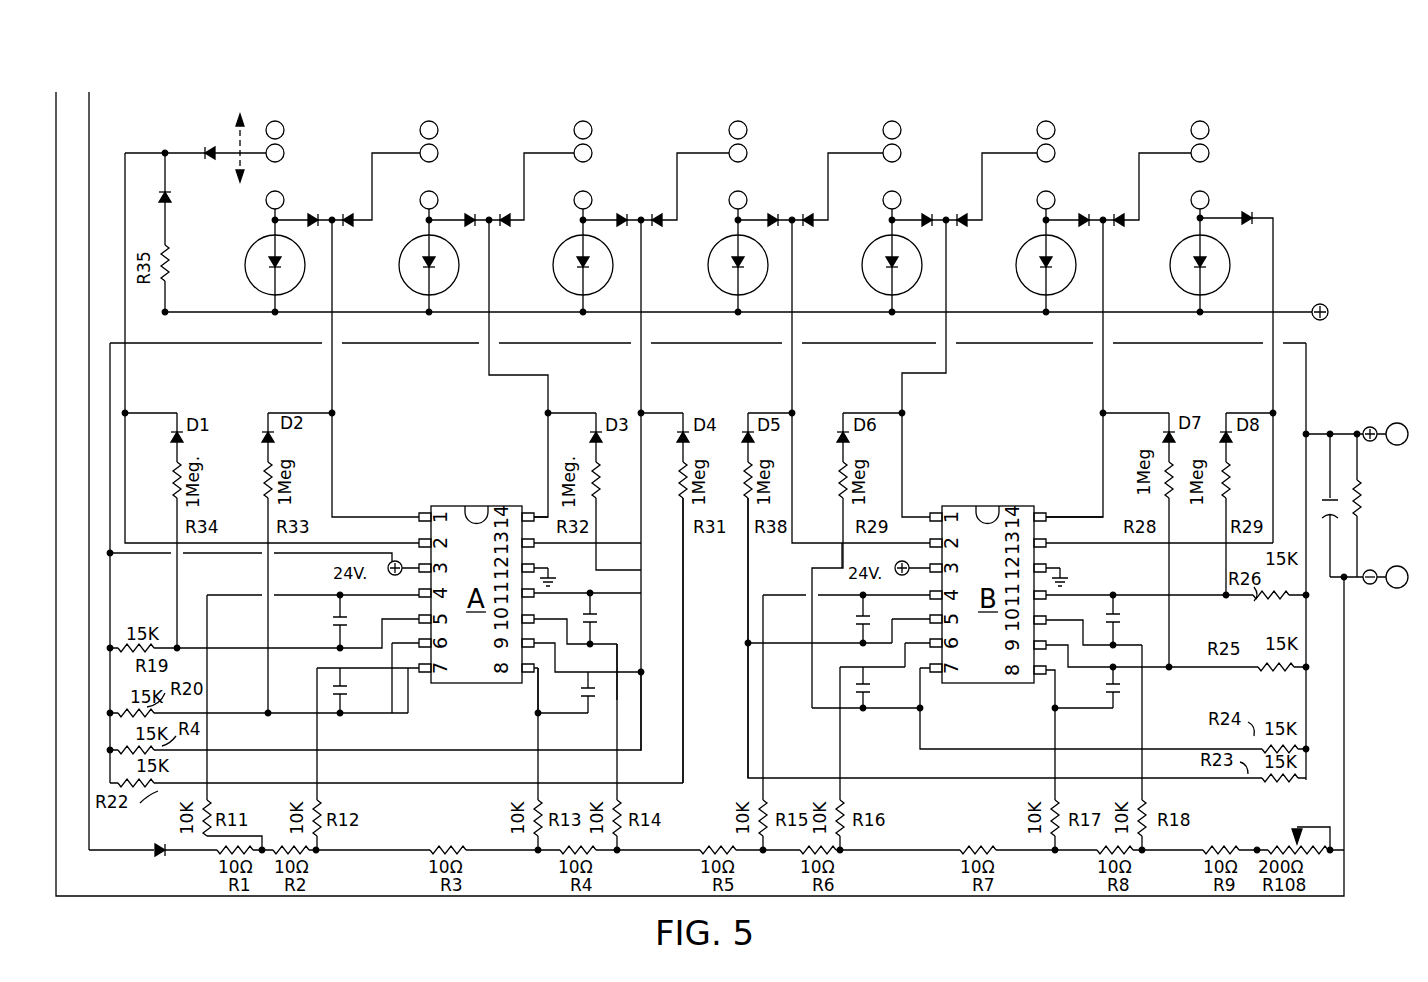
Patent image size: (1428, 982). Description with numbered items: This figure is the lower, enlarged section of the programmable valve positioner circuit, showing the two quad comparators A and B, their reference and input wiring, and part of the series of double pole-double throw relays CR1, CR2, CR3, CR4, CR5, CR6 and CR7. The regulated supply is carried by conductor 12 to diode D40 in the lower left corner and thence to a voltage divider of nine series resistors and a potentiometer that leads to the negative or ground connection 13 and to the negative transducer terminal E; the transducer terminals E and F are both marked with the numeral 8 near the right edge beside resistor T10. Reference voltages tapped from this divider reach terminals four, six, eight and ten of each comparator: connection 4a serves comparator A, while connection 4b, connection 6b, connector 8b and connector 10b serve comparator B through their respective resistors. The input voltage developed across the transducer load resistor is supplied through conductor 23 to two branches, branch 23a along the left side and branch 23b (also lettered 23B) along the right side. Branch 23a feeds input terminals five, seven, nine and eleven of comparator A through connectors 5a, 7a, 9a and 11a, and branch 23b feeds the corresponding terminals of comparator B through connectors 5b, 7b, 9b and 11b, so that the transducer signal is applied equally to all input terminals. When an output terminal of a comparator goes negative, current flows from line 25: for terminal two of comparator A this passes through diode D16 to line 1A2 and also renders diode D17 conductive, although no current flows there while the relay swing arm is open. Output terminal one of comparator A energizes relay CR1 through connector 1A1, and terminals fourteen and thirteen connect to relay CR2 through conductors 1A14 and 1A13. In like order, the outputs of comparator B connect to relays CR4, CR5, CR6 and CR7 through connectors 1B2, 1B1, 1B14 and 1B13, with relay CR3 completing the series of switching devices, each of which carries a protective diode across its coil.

The conductor 12 is at (158, 872).
The negative or ground connection 13 is at (1272, 896).
The conductor 23 is at (1178, 350).
The line 25 is at (843, 320).
The connector to output terminal 1 of comparator A 1A1 is at (374, 368).
The line to output terminal 2 of comparator A 1A2 is at (270, 348).
The conductor to output terminal 13 of comparator A 1A13 is at (619, 485).
The conductor to output terminal 14 of comparator A 1A14 is at (520, 368).
The connector to output terminal 1 of comparator B 1B1 is at (949, 368).
The connector to output terminal 2 of comparator B 1B2 is at (859, 381).
The connector to output terminal 13 of comparator B 1B13 is at (1320, 561).
The connector to output terminal 14 of comparator B 1B14 is at (1106, 368).
The branch 23a is at (110, 592).
The branch 23b is at (1271, 620).
The branch 23B is at (1271, 695).
The connection 4a is at (207, 590).
The connector 5a is at (285, 648).
The connector 7a is at (222, 713).
The connector 8b is at (795, 759).
The connector 9a is at (553, 739).
The connector 10b is at (883, 747).
The connector 11a is at (707, 640).
The connection 4b is at (763, 742).
The connector 5b is at (935, 778).
The connection 6b is at (840, 737).
The connector 7b is at (960, 749).
The connector 9b is at (1190, 671).
The connector 11b is at (1185, 598).
The terminal 8 is at (1406, 603).
The thermistor T10 is at (1358, 480).
The relay CR1 is at (306, 218).
The relay CR2 is at (460, 218).
The relay CR3 is at (615, 218).
The relay CR4 is at (769, 218).
The relay CR5 is at (923, 218).
The relay CR6 is at (1077, 218).
The relay CR7 is at (1195, 332).
The diode D16 is at (176, 232).
The diode D17 is at (195, 152).
The diode D40 is at (141, 836).